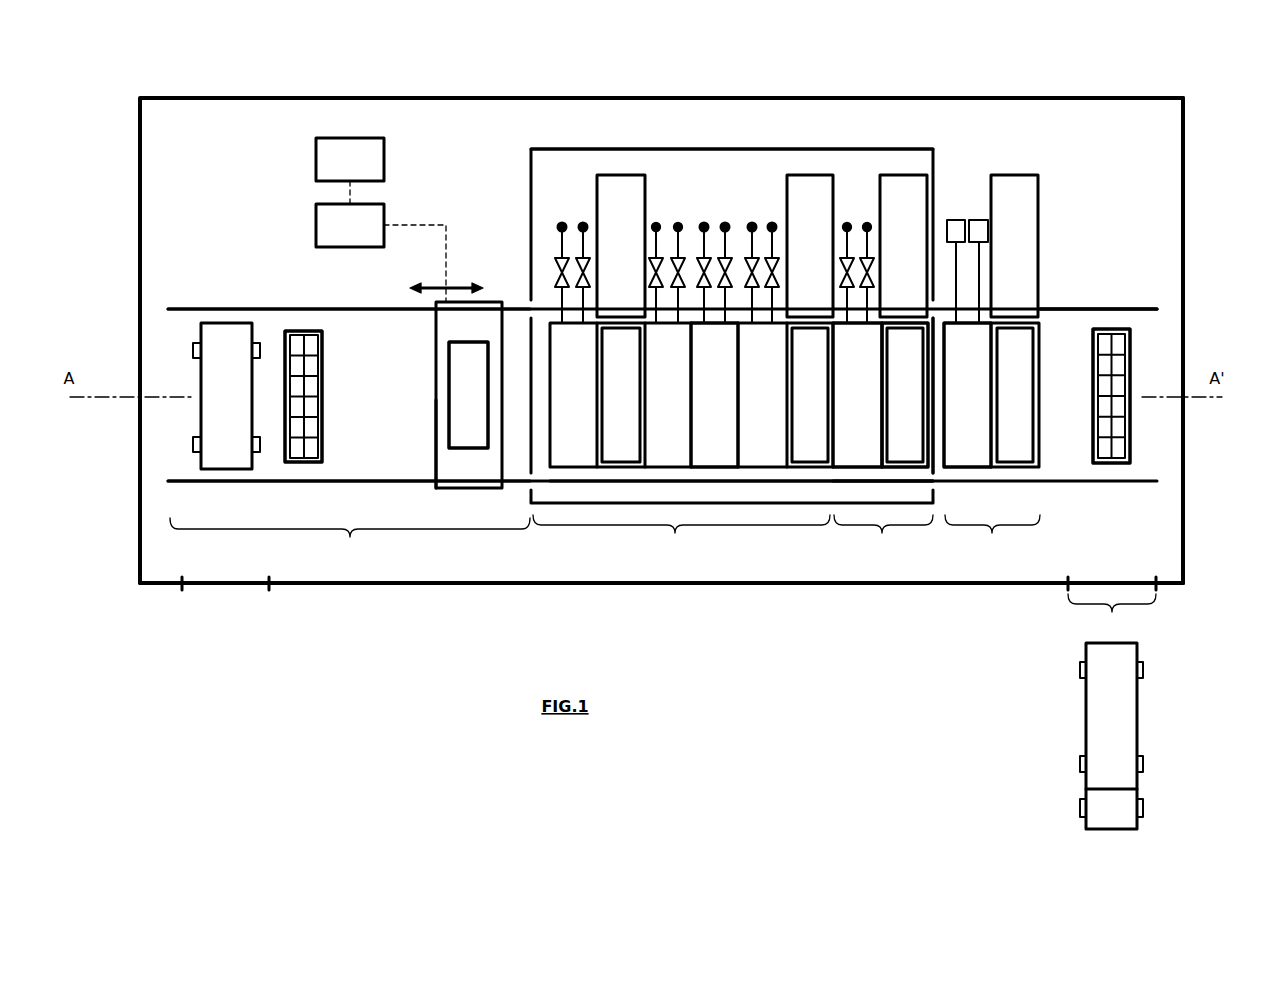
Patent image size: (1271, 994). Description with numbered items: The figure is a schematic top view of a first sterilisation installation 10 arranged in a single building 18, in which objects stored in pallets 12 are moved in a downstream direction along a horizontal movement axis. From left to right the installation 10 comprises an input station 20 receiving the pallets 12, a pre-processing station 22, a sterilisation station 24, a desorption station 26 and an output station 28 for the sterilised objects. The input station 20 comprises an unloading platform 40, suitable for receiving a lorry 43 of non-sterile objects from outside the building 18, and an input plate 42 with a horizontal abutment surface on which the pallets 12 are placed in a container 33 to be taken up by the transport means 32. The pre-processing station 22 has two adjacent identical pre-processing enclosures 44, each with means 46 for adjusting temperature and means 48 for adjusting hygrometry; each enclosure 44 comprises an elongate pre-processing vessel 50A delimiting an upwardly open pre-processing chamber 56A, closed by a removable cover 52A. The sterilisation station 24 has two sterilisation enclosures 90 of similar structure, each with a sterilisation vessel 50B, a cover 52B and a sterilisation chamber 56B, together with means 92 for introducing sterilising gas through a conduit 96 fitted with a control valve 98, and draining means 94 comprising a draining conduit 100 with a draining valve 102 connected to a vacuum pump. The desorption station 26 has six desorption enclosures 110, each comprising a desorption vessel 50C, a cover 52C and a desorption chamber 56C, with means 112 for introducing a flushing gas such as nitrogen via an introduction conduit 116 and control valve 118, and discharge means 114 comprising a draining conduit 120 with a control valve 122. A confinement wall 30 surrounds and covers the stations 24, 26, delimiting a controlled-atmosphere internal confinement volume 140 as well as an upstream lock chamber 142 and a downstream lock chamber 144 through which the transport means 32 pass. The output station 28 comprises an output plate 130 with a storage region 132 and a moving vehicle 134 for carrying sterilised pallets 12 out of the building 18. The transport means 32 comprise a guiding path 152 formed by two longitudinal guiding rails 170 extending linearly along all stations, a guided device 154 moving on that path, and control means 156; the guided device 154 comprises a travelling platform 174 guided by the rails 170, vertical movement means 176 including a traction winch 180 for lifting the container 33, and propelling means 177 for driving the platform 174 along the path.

The first sterilisation installation 10 is at (1100, 136).
The pallet 12 is at (1120, 347).
The building 18 is at (1186, 203).
The input station 20 is at (1112, 614).
The pre-processing station 22 is at (992, 540).
The sterilisation station 24 is at (883, 539).
The desorption station 26 is at (681, 539).
The output station 28 is at (350, 541).
The confinement wall 30 is at (737, 145).
The transport means 32 is at (1124, 302).
The container 33 is at (307, 463).
The unloading platform 40 is at (1172, 537).
The input plate 42 is at (1157, 445).
The lorry 43 is at (1093, 717).
The pre-processing enclosure 44 is at (1060, 344).
The means for adjusting the temperature 46 is at (982, 230).
The means for adjusting the hygrometry 48 is at (960, 244).
The pre-processing vessel 50A is at (1040, 433).
The sterilisation vessel 50B is at (908, 460).
The desorption vessel 50C is at (597, 350).
The removable cover 52A is at (970, 455).
The cover 52B is at (922, 203).
The cover 52C is at (755, 460).
The pre-processing chamber 56A is at (1025, 452).
The sterilisation chamber 56B is at (805, 457).
The desorption chamber 56C is at (607, 453).
The sterilisation enclosure 90 is at (833, 490).
The means for introducing a sterilising gas 92 is at (850, 224).
The means for draining 94 is at (878, 244).
The conduit for introducing sterilising gas 96 is at (840, 293).
The control valve 98 is at (840, 268).
The draining conduit 100 is at (868, 300).
The draining valve 102 is at (868, 277).
The desorption enclosure 110 is at (614, 490).
The means for introducing a flushing gas 112 is at (663, 224).
The means for discharging the desorbed gases 114 is at (683, 233).
The introduction conduit 116 is at (653, 239).
The control valve 118 is at (653, 275).
The draining conduit 120 is at (682, 297).
The control valve 122 is at (659, 300).
The output plate 130 is at (268, 330).
The storage region 132 is at (322, 360).
The moving vehicle 134 is at (207, 372).
The internal confinement volume 140 is at (530, 185).
The upstream lock chamber 142 is at (937, 407).
The downstream lock chamber 144 is at (528, 466).
The guiding path 152 is at (166, 488).
The guided device 154 is at (432, 465).
The means for controlling the movement 156 is at (316, 160).
The longitudinal guiding rail 170 is at (210, 308).
The travelling platform 174 is at (443, 318).
The means for vertical movement 176 is at (445, 407).
The means for propelling 177 is at (316, 232).
The traction winch 180 is at (473, 449).